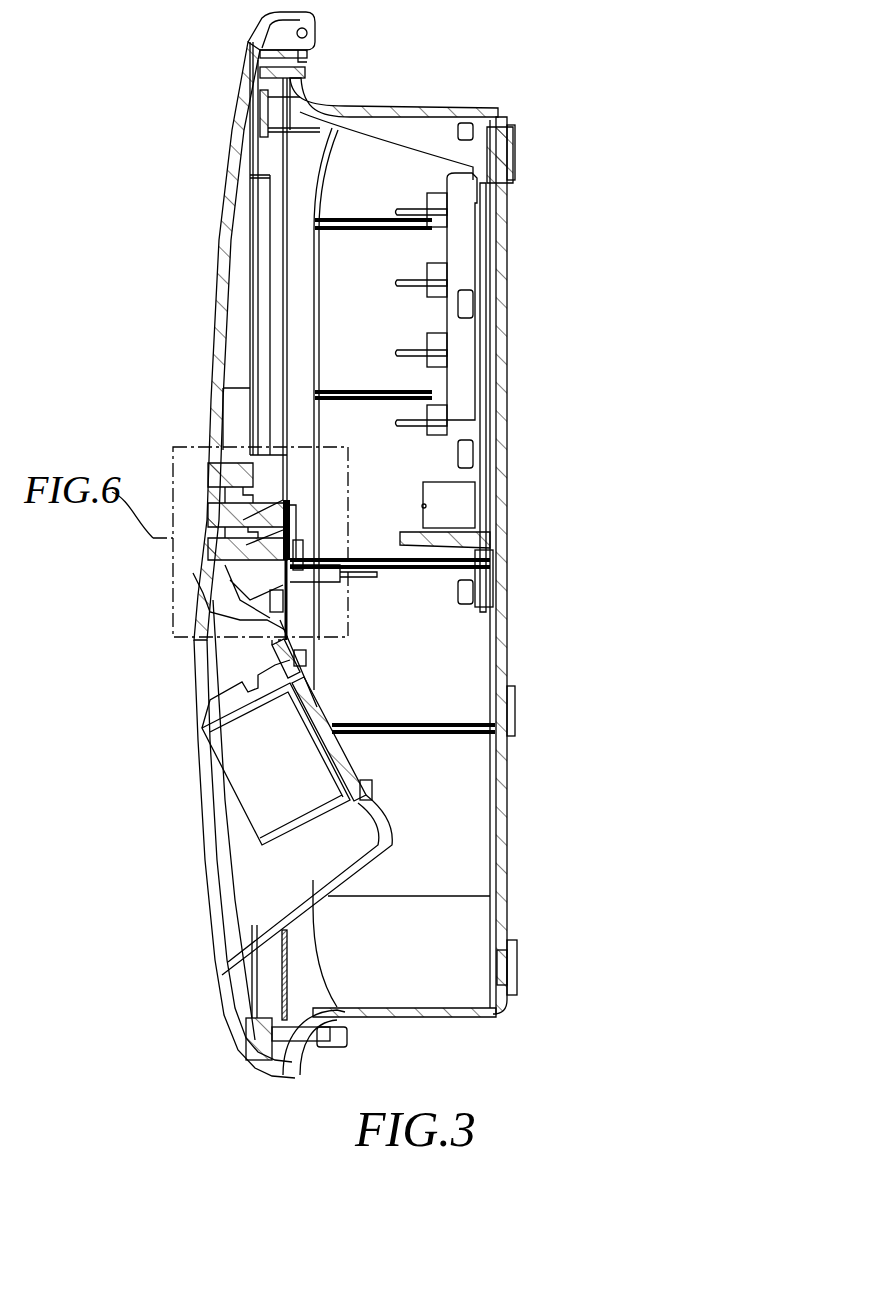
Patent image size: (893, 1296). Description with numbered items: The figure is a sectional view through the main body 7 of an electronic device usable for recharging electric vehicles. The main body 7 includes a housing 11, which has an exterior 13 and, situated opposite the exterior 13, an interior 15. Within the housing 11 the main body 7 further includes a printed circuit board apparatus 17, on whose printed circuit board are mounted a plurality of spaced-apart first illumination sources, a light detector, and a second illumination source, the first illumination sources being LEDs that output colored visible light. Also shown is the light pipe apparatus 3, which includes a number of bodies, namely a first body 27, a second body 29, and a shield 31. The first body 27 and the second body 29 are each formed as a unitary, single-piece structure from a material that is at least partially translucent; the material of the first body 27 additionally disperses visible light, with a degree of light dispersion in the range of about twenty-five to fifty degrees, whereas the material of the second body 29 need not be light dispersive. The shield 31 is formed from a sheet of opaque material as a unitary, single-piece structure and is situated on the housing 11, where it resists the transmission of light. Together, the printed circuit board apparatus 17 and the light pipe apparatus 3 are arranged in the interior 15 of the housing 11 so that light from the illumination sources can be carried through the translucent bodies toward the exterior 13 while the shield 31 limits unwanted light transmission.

The light pipe apparatus 3 is at (276, 491).
The main body 7 is at (459, 102).
The housing 11 is at (352, 104).
The exterior 13 is at (597, 127).
The interior 15 is at (446, 680).
The printed circuit board apparatus 17 is at (296, 509).
The first body 27 is at (206, 503).
The second body 29 is at (290, 598).
The shield 31 is at (291, 533).